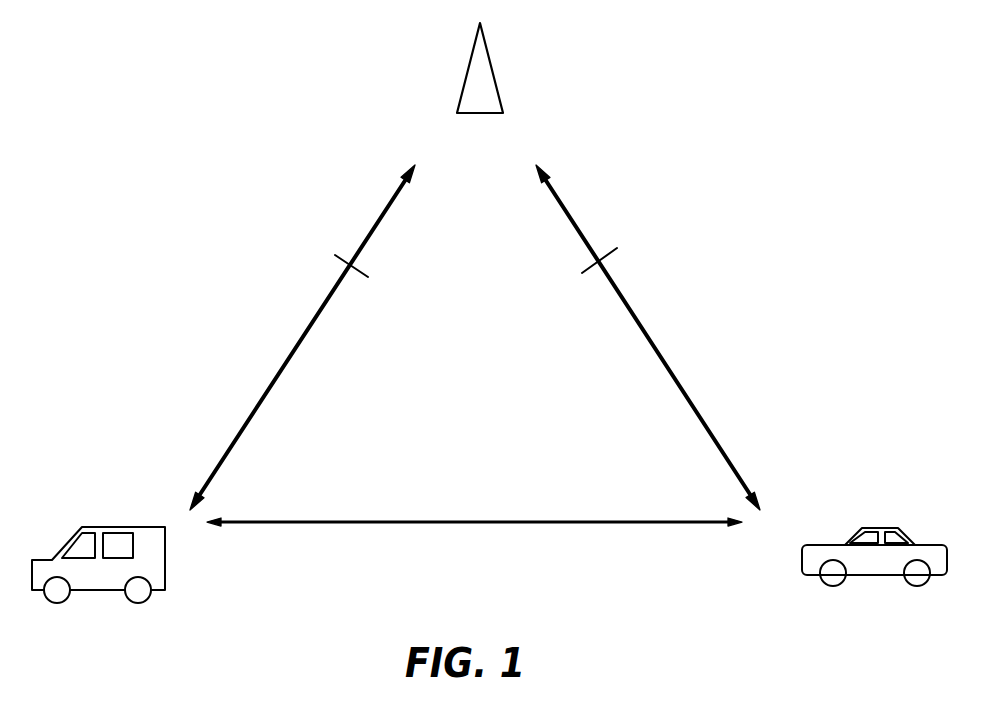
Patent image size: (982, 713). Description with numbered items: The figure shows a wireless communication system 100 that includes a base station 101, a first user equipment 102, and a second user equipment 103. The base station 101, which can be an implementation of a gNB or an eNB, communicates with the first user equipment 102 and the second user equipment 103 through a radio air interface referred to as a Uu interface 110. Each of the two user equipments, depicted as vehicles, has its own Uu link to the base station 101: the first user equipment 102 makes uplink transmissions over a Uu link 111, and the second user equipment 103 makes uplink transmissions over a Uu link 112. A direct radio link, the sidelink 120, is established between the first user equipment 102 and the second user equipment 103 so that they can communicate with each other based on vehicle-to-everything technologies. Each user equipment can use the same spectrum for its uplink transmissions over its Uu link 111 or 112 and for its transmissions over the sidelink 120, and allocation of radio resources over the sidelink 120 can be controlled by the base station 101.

The wireless communication system 100 is at (800, 82).
The base station 101 is at (497, 72).
The first user equipment 102 is at (107, 580).
The second user equipment 103 is at (882, 565).
The Uu interface 110 is at (592, 265).
The Uu link 111 is at (282, 373).
The Uu link 112 is at (663, 373).
The sidelink 120 is at (332, 520).